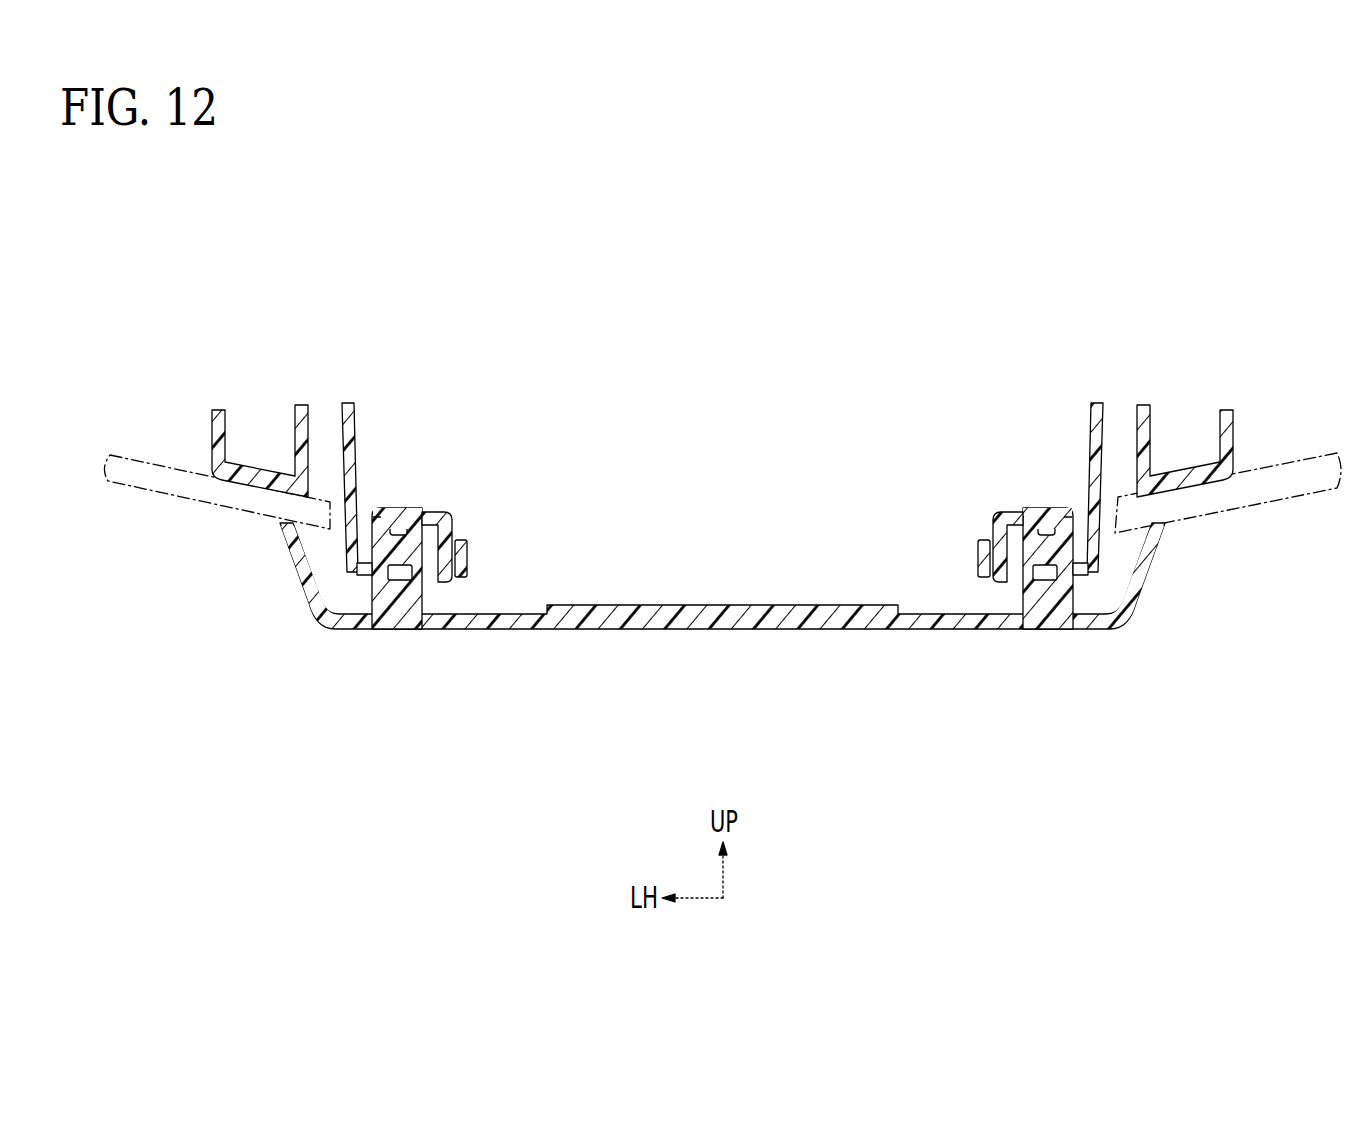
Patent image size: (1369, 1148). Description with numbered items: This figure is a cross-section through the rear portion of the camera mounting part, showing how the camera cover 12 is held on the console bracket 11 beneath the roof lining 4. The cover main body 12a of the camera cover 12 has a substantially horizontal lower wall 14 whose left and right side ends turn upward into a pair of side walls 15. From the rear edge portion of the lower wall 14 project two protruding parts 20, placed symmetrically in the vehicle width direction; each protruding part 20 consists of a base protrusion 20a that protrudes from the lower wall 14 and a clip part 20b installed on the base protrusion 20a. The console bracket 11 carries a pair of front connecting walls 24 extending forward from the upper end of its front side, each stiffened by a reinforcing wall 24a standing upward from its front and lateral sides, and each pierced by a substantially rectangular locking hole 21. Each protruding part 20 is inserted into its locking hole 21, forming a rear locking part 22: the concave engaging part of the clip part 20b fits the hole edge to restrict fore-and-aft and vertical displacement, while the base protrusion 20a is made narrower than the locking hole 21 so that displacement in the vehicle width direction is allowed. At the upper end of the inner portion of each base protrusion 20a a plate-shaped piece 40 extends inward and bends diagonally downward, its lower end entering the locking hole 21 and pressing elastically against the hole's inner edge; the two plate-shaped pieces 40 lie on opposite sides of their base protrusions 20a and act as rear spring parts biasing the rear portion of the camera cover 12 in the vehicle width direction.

The roof lining 4 is at (1263, 500).
The console bracket 11 is at (1106, 536).
The camera cover 12 is at (725, 681).
The cover main body 12a is at (866, 647).
The lower wall 14 is at (523, 630).
The side wall 15 is at (293, 577).
The protruding part 20 is at (741, 583).
The base protrusion 20a is at (420, 592).
The clip part 20b is at (400, 508).
The locking hole 21 is at (418, 590).
The rear locking part 22 is at (420, 488).
The front connecting wall 24 is at (364, 576).
The reinforcing wall 24a is at (468, 556).
The plate-shaped piece 40 is at (453, 528).